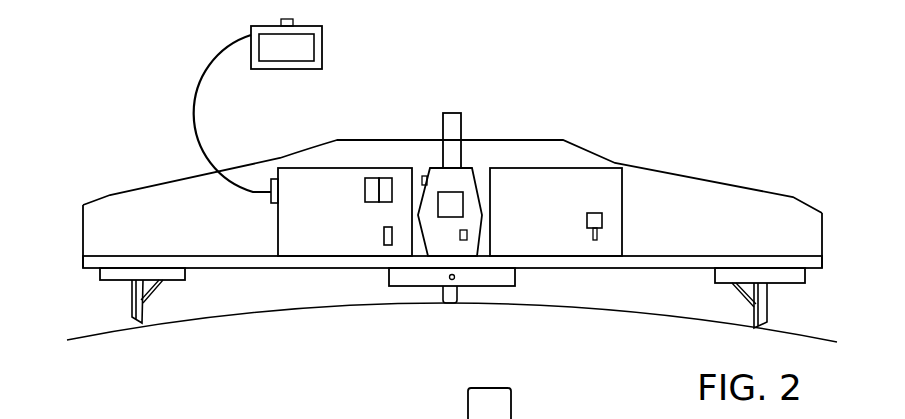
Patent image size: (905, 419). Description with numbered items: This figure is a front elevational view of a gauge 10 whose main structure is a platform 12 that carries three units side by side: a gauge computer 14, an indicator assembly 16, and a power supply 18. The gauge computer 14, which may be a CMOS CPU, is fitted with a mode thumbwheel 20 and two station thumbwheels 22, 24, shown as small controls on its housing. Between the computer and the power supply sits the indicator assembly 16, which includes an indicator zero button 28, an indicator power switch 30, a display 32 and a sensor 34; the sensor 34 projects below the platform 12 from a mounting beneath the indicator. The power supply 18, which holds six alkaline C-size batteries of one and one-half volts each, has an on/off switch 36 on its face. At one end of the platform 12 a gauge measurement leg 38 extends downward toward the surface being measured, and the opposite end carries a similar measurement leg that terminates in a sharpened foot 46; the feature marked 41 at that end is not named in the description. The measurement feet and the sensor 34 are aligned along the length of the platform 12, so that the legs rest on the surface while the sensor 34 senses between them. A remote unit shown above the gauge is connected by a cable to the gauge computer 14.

The gauge 10 is at (640, 107).
The platform 12 is at (706, 254).
The gauge computer 14 is at (325, 220).
The indicator assembly 16 is at (452, 240).
The power supply 18 is at (535, 228).
The mode thumbwheel 20 is at (382, 244).
The station thumbwheel 22 is at (372, 176).
The station thumbwheel 24 is at (388, 175).
The indicator zero button 28 is at (463, 244).
The indicator power switch 30 is at (423, 172).
The display 32 is at (462, 188).
The sensor 34 is at (442, 303).
The on/off switch 36 is at (600, 211).
The gauge measurement leg 38 is at (130, 300).
The support foot 41 is at (770, 320).
The sharpened foot 46 is at (327, 46).